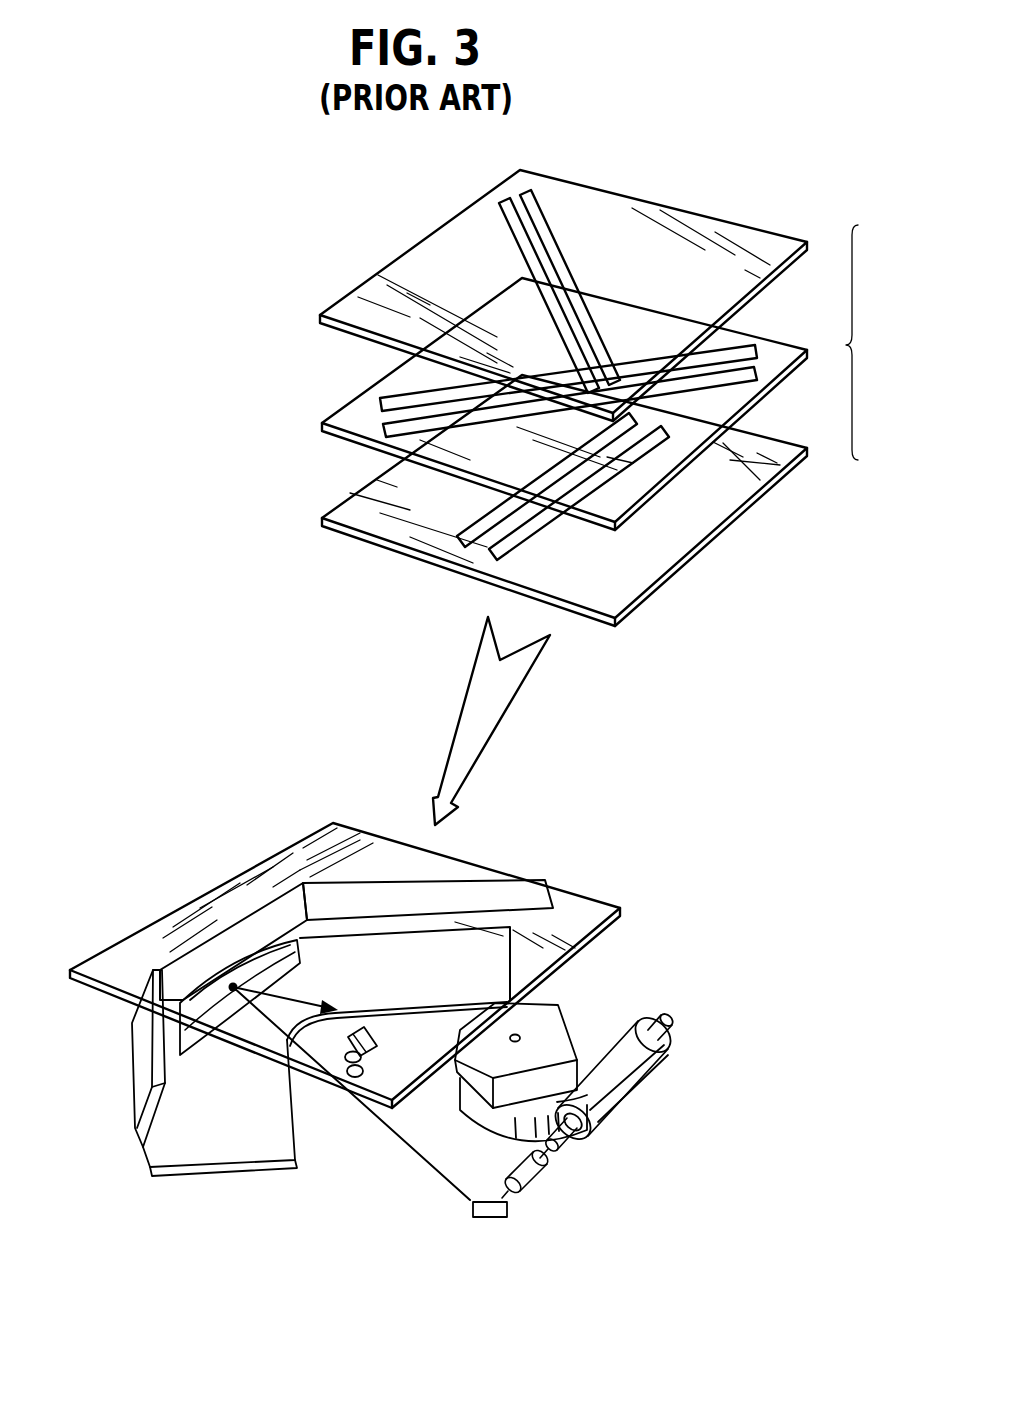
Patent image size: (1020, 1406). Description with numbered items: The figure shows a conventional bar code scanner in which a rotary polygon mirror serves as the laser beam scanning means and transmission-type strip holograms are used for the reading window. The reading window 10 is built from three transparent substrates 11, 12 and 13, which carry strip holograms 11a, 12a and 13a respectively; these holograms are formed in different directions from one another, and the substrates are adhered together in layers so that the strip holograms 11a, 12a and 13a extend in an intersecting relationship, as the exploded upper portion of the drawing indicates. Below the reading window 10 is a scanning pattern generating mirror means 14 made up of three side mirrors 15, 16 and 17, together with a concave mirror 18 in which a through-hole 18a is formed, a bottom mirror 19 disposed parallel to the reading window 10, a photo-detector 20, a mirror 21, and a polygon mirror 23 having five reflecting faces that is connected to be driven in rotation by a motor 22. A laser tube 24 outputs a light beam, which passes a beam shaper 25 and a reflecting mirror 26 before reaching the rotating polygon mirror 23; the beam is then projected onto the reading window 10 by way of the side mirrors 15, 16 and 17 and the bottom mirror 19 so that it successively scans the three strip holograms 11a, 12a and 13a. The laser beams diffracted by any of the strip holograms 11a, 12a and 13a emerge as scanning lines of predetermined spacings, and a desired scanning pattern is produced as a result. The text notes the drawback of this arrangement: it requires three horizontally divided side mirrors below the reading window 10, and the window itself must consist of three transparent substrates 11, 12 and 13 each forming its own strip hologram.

The reading window 10 is at (350, 835).
The transparent substrate 11 is at (325, 415).
The strip hologram 11a is at (385, 400).
The transparent substrate 12 is at (660, 207).
The strip hologram 12a is at (505, 227).
The transparent substrate 13 is at (673, 550).
The strip hologram 13a is at (466, 540).
The scanning pattern generating mirror means 14 is at (257, 898).
The side mirror 15 is at (140, 1065).
The side mirror 16 is at (167, 968).
The side mirror 17 is at (540, 880).
The concave mirror 18 is at (307, 947).
The through-hole 18a is at (223, 960).
The bottom mirror 19 is at (212, 1150).
The photo-detector 20 is at (356, 1083).
The mirror 21 is at (373, 1052).
The motor 22 is at (537, 1140).
The polygon mirror 23 is at (555, 1010).
The laser tube 24 is at (640, 1063).
The beam shaper 25 is at (533, 1185).
The reflecting mirror 26 is at (488, 1217).